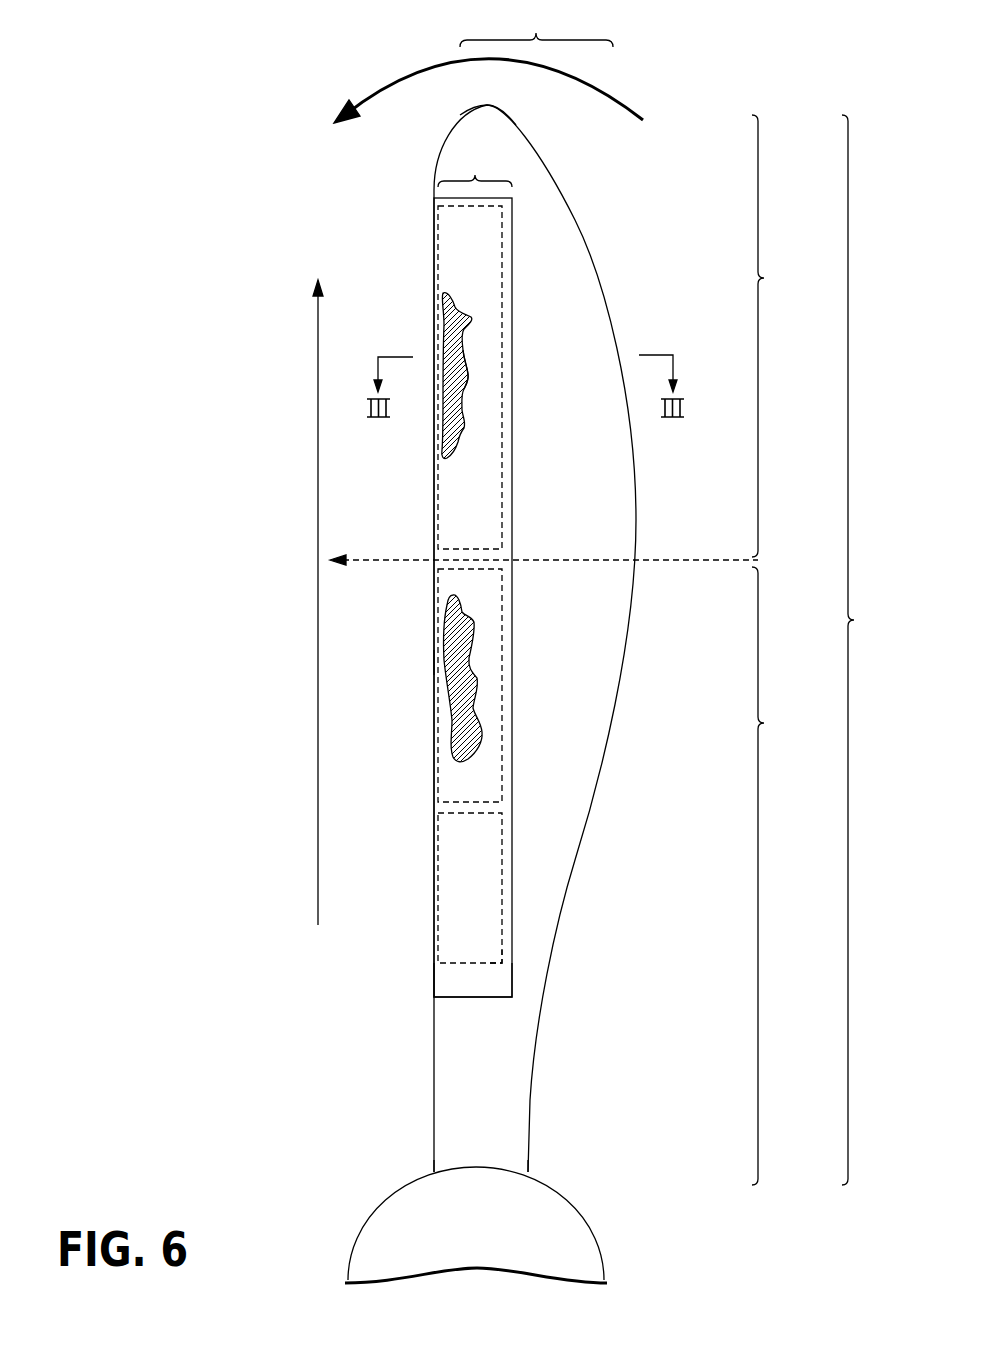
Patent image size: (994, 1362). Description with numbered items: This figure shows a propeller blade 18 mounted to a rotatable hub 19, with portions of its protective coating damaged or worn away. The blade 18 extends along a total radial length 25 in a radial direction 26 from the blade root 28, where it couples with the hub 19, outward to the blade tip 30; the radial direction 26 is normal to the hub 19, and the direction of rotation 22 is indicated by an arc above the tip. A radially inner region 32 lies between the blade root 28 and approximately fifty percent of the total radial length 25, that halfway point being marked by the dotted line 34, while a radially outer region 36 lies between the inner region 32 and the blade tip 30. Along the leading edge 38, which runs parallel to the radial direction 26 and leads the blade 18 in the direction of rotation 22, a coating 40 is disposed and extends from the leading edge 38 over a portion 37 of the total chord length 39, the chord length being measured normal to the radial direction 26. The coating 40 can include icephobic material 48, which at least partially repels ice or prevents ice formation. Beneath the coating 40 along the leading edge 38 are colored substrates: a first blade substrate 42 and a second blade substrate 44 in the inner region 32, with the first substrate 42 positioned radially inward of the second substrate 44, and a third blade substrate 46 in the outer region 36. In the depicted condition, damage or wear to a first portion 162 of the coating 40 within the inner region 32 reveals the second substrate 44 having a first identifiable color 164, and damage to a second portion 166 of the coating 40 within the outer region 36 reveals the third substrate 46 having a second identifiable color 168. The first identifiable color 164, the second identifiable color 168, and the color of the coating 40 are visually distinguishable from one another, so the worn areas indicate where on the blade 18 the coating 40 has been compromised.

The propeller blade 18 is at (619, 302).
The hub 19 is at (525, 1230).
The direction of rotation 22 is at (610, 90).
The total radial length 25 is at (867, 650).
The radial direction 26 is at (317, 590).
The blade root 28 is at (547, 1170).
The blade tip 30 is at (527, 114).
The radially inner region 32 is at (779, 876).
The dotted line 34 is at (660, 553).
The radially outer region 36 is at (777, 336).
The portion of the total chord length 37 is at (475, 164).
The leading edge 38 is at (428, 520).
The total chord length 39 is at (536, 25).
The coating 40 is at (455, 980).
The first blade substrate 42 is at (462, 891).
The second blade substrate 44 is at (453, 773).
The third blade substrate 46 is at (457, 272).
The icephobic material 48 is at (488, 977).
The first portion of the coating 162 is at (453, 642).
The first identifiable color 164 is at (430, 662).
The second portion of the coating 166 is at (433, 335).
The second identifiable color 168 is at (447, 377).